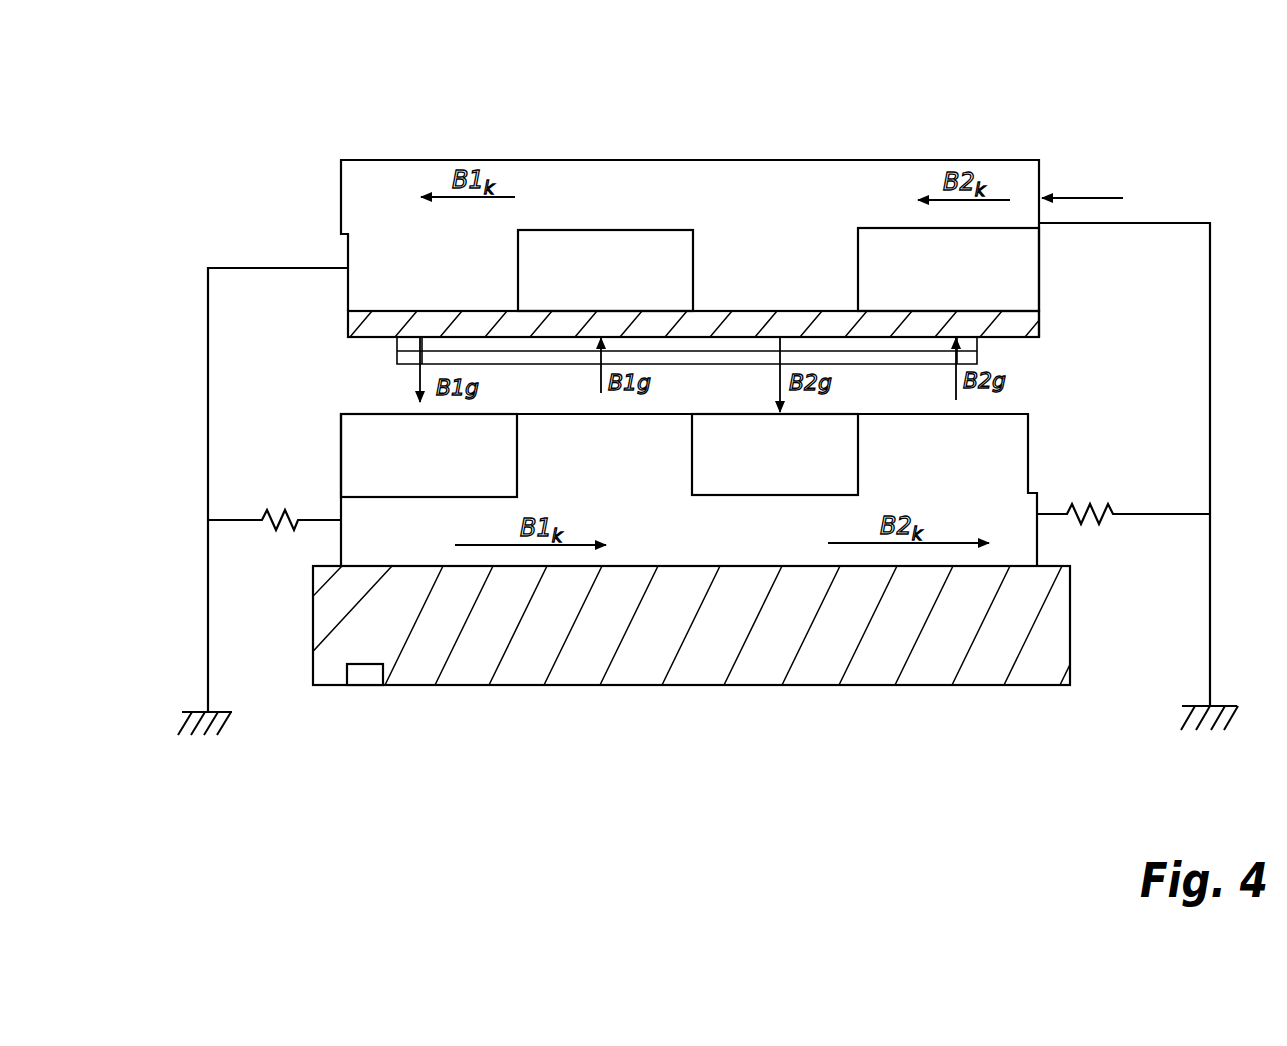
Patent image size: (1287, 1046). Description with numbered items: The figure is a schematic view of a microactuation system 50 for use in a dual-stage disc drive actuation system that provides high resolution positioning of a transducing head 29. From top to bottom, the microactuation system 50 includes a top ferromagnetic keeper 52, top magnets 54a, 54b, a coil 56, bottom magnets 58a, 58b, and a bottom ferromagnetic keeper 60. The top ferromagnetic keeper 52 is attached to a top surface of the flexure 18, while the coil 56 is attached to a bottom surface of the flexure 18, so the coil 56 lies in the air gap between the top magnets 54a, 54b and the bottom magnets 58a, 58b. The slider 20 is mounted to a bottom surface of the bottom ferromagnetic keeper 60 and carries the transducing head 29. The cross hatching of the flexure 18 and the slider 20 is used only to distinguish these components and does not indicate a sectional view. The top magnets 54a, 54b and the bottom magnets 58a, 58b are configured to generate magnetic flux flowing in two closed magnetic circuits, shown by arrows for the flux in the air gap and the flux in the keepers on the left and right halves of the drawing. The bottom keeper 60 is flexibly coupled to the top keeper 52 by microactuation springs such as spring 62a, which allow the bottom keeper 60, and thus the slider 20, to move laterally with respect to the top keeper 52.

The microactuation system 50 is at (1118, 90).
The top ferromagnetic keeper 52 is at (1007, 160).
The top magnet 54a is at (553, 245).
The top magnet 54b is at (880, 255).
The flexure 18 is at (1041, 320).
The coil 56 is at (759, 358).
The bottom magnet 58a is at (378, 428).
The bottom magnet 58b is at (721, 430).
The bottom ferromagnetic keeper 60 is at (1032, 473).
The microactuation spring 62a is at (263, 527).
The slider 20 is at (1050, 640).
The transducing head 29 is at (363, 676).